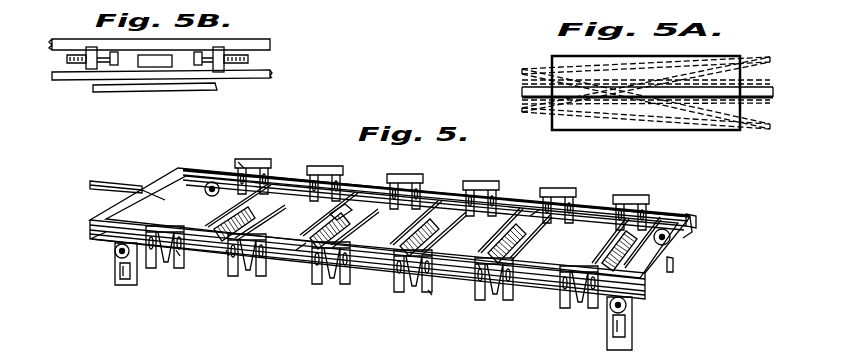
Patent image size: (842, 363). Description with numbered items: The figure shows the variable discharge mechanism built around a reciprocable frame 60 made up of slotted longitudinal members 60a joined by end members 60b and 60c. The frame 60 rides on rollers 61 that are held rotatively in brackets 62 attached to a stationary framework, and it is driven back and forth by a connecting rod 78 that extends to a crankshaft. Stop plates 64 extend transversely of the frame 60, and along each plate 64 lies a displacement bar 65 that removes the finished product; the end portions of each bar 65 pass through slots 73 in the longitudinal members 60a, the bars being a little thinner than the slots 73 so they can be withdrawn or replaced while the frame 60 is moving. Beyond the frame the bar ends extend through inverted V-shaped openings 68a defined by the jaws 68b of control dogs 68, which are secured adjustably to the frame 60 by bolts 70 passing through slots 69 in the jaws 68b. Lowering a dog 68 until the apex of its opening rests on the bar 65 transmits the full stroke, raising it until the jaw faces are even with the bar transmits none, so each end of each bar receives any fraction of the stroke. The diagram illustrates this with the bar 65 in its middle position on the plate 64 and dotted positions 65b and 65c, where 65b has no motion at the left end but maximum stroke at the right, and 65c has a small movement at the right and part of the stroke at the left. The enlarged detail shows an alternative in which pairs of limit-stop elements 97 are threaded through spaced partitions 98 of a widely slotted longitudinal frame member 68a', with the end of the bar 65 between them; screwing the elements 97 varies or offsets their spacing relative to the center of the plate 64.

In FIG. 5, the reciprocable frame 60 is at (187, 166).
In FIG. 5, the slotted longitudinal member 60a is at (443, 192).
In FIG. 5, the end member 60b is at (166, 175).
In FIG. 5, the end member 60c is at (690, 228).
In FIG. 5, the roller 61 is at (207, 191).
In FIG. 5, the bracket 62 is at (118, 273).
In FIG. 5B, the stop plate 64 is at (147, 87).
In FIG. 5A, the stop plate 64 is at (672, 123).
In FIG. 5, the stop plate 64 is at (262, 218).
In FIG. 5B, the displacement bar 65 is at (150, 62).
In FIG. 5A, the displacement bar 65 is at (630, 90).
In FIG. 5, the displacement bar 65 is at (292, 205).
In FIG. 5A, the alternate bar position 65b is at (757, 58).
In FIG. 5A, the alternate bar position 65c is at (541, 108).
In FIG. 5, the control dog 68 is at (330, 152).
In FIG. 5B, the opening 68a is at (179, 90).
In FIG. 5, the opening 68a is at (372, 283).
In FIG. 5B, the slotted reciprocatory longitudinal frame member 68a' is at (178, 34).
In FIG. 5, the jaw 68b is at (348, 285).
In FIG. 5, the slot 69 is at (240, 162).
In FIG. 5, the bolt 70 is at (330, 215).
In FIG. 5, the slot 73 is at (530, 216).
In FIG. 5, the connecting rod 78 is at (107, 194).
In FIG. 5B, the limit-stop element 97 is at (67, 60).
In FIG. 5B, the partition 98 is at (90, 67).